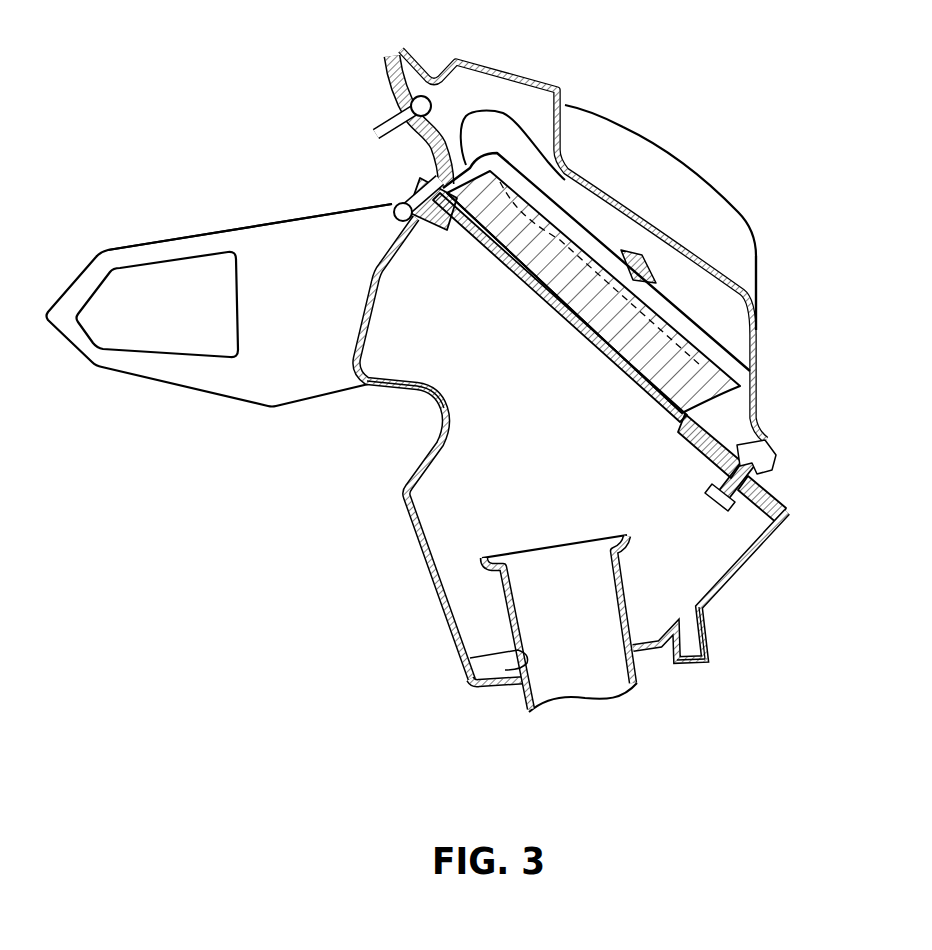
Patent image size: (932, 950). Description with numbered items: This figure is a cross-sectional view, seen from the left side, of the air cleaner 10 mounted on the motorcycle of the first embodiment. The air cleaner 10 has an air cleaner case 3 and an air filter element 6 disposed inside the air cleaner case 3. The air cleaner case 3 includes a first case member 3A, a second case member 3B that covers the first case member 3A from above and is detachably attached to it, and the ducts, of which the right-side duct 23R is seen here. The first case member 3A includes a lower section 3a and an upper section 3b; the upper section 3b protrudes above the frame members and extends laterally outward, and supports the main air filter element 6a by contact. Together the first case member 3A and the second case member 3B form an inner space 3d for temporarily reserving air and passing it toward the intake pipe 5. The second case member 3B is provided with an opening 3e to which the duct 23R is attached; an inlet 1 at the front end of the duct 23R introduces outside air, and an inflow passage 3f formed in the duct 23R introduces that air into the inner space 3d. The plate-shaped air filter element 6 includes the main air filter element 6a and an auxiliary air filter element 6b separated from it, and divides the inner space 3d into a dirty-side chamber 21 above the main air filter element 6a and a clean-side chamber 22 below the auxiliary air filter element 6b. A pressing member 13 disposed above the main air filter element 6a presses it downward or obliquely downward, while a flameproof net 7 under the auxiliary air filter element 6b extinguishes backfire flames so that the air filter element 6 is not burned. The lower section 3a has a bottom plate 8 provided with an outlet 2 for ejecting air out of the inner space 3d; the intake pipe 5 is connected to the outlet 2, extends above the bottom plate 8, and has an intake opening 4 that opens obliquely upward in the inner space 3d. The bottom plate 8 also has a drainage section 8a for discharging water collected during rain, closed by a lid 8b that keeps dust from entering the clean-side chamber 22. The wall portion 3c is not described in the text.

The inlet 1 is at (140, 273).
The duct 23R is at (305, 230).
The inflow passage 3f is at (169, 318).
The inner space 3d is at (542, 428).
The clean-side chamber 22 is at (437, 378).
The bottom plate 8 is at (489, 684).
The opening 3e is at (490, 118).
The upper wall 3c is at (586, 172).
The air cleaner 10 is at (787, 140).
The dirty-side chamber 21 is at (728, 302).
The pressing member 13 is at (583, 224).
The main air filter element 6a is at (695, 362).
The auxiliary air filter element 6b is at (690, 400).
The air filter element 6 is at (843, 358).
The flameproof net 7 is at (680, 410).
The second case member 3B is at (768, 440).
The upper section 3b is at (780, 527).
The lower section 3a is at (742, 565).
The drainage section 8a is at (703, 630).
The lid 8b is at (694, 666).
The first case member 3A is at (852, 512).
The air cleaner case 3 is at (890, 458).
The intake opening 4 is at (573, 553).
The intake pipe 5 is at (503, 593).
The outlet 2 is at (470, 659).